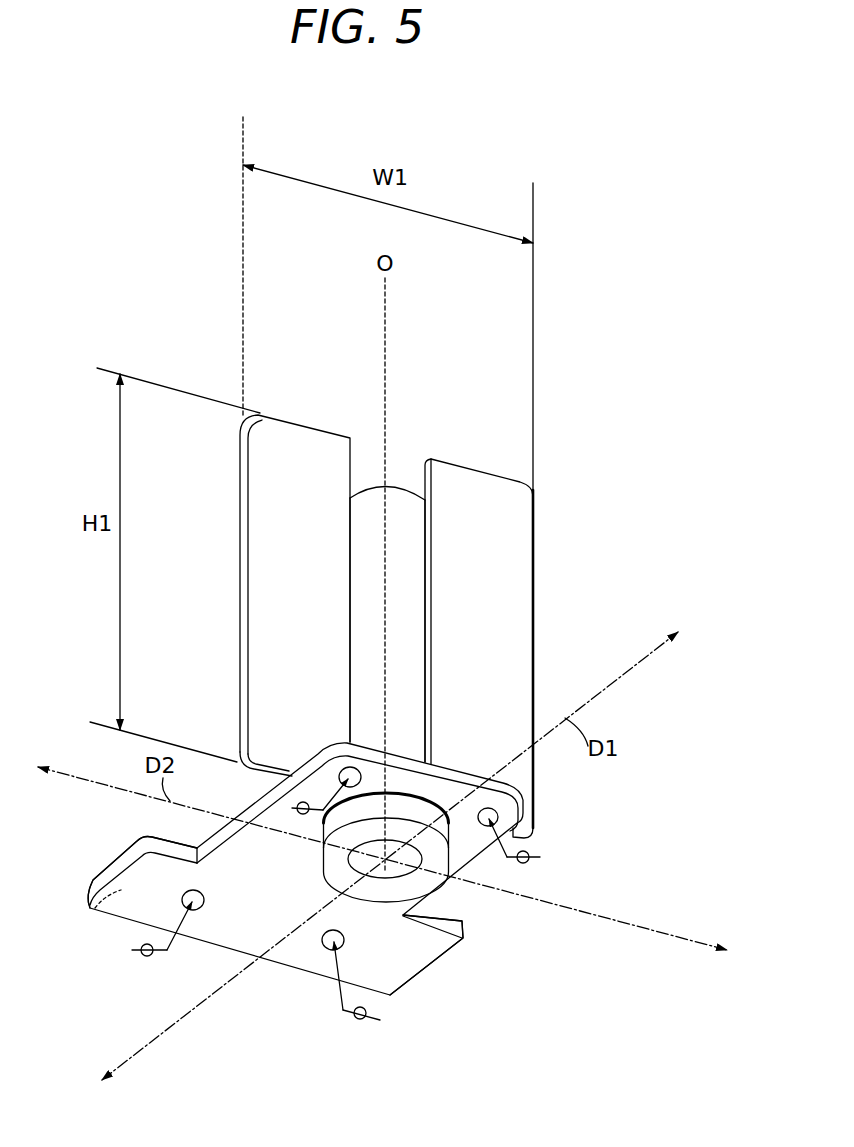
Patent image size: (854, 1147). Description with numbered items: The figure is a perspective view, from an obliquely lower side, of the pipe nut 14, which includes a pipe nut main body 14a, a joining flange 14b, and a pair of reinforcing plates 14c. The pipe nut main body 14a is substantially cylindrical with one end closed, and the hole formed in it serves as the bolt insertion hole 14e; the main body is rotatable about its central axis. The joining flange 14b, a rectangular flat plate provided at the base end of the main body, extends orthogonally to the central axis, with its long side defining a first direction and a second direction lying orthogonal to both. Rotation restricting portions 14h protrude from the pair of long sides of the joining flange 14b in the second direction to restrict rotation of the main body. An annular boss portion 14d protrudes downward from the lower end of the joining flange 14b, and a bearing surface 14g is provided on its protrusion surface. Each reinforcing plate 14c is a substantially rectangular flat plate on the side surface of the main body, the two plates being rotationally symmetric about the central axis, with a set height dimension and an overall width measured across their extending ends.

The pipe nut 14 is at (188, 300).
The pipe nut main body 14a is at (368, 584).
The joining flange 14b is at (207, 950).
The reinforcing plate 14c is at (310, 422).
The boss portion 14d is at (502, 858).
The bolt insertion hole 14e is at (392, 878).
The bearing surface 14g is at (422, 876).
The rotation restricting portion 14h is at (88, 907).